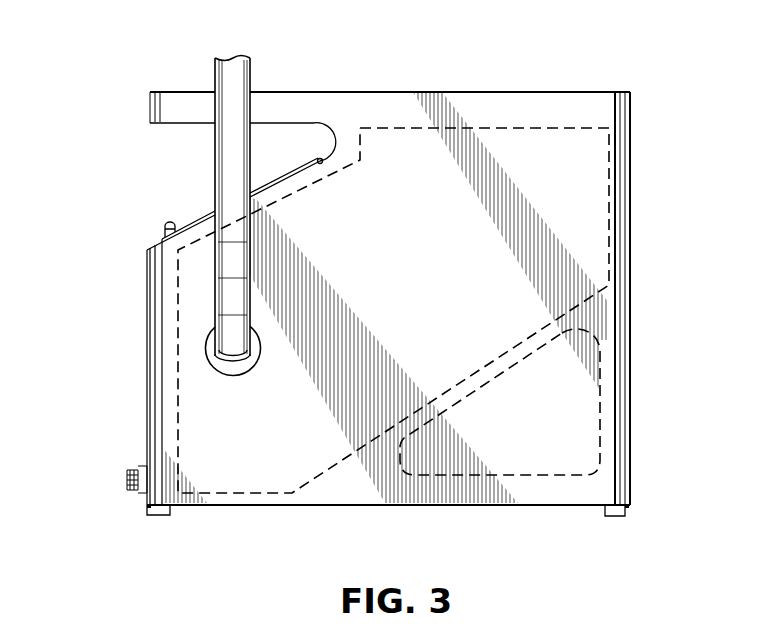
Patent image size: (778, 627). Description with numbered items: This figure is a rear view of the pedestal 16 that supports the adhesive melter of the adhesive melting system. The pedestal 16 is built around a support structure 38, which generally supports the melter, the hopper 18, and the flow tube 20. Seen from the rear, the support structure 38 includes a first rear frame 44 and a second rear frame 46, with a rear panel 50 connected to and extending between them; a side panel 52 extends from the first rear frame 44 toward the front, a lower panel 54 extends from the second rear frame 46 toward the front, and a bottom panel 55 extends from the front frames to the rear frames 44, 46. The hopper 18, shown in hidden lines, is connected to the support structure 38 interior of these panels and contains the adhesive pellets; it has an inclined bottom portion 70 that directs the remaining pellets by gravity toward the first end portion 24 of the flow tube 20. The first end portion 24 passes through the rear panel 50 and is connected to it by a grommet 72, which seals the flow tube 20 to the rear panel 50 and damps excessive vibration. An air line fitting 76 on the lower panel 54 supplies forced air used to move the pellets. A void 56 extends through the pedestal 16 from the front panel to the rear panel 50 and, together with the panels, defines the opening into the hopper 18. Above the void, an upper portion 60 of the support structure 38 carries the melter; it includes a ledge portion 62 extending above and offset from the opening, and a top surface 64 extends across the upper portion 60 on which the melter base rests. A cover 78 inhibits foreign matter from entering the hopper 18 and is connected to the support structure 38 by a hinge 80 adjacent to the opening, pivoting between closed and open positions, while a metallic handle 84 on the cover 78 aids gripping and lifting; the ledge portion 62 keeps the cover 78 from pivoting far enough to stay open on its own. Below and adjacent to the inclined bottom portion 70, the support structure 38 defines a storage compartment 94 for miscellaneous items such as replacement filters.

The pedestal 16 is at (162, 50).
The hopper 18 is at (610, 225).
The flow tube 20 is at (253, 70).
The first end portion 24 is at (222, 346).
The support structure 38 is at (149, 510).
The first rear frame 44 is at (620, 517).
The second rear frame 46 is at (160, 516).
The rear panel 50 is at (418, 303).
The side panel 52 is at (630, 438).
The lower panel 54 is at (147, 272).
The bottom panel 55 is at (465, 507).
The void 56 is at (299, 144).
The upper portion 60 is at (138, 92).
The ledge portion 62 is at (182, 124).
The top surface 64 is at (505, 91).
The inclined bottom portion 70 is at (352, 463).
The grommet 72 is at (210, 362).
The air line fitting 76 is at (125, 478).
The cover 78 is at (208, 215).
The hinge 80 is at (333, 145).
The handle 84 is at (160, 228).
The storage compartment 94 is at (537, 477).